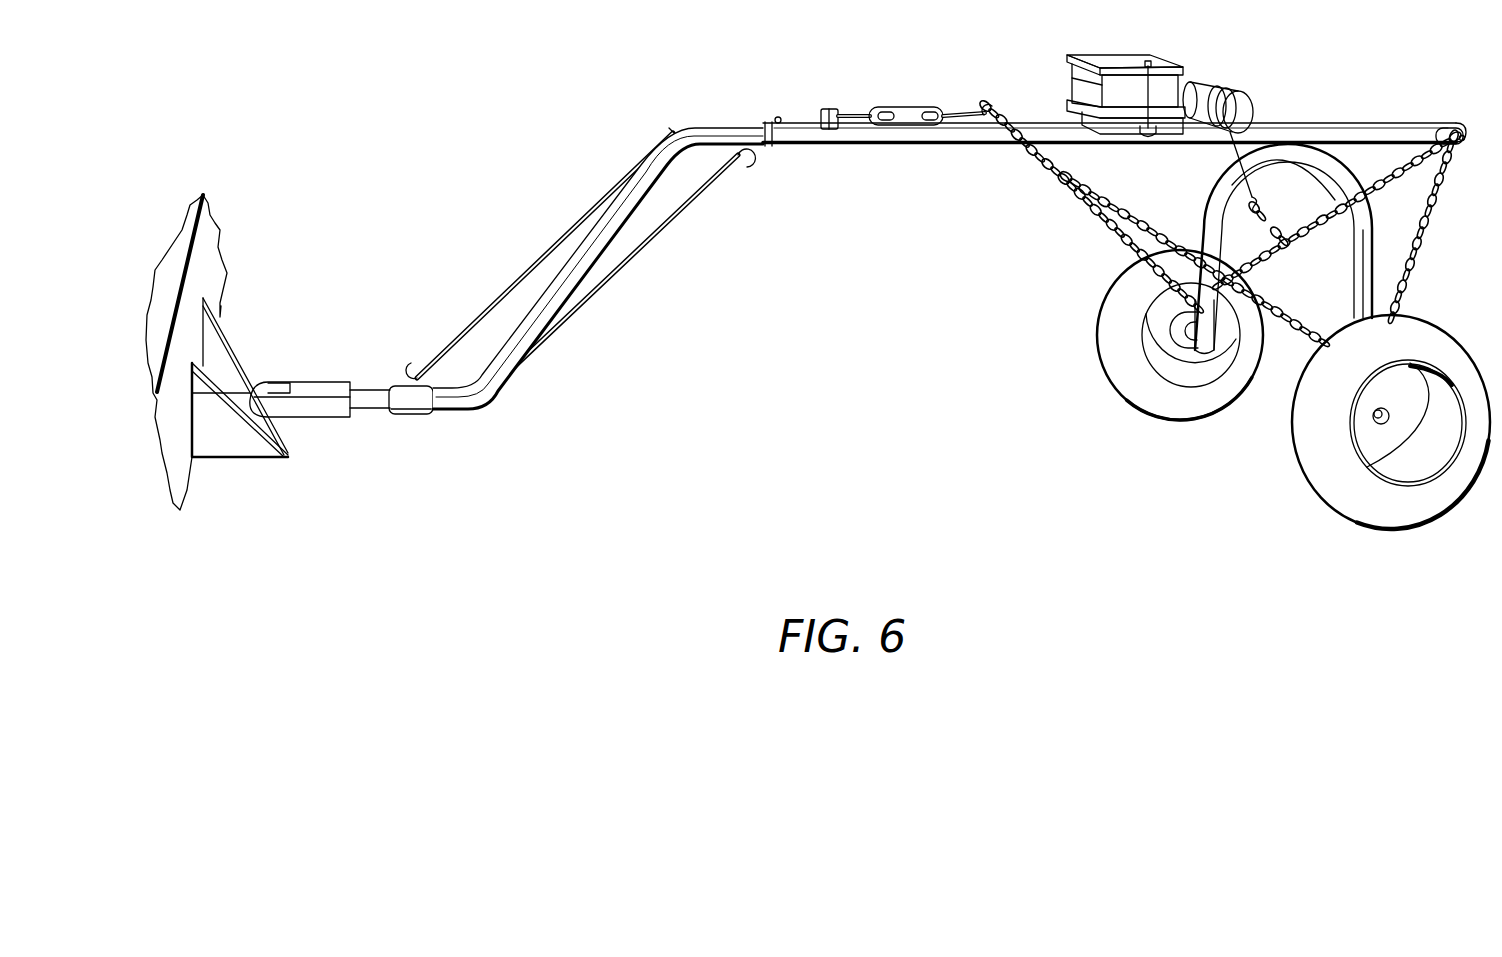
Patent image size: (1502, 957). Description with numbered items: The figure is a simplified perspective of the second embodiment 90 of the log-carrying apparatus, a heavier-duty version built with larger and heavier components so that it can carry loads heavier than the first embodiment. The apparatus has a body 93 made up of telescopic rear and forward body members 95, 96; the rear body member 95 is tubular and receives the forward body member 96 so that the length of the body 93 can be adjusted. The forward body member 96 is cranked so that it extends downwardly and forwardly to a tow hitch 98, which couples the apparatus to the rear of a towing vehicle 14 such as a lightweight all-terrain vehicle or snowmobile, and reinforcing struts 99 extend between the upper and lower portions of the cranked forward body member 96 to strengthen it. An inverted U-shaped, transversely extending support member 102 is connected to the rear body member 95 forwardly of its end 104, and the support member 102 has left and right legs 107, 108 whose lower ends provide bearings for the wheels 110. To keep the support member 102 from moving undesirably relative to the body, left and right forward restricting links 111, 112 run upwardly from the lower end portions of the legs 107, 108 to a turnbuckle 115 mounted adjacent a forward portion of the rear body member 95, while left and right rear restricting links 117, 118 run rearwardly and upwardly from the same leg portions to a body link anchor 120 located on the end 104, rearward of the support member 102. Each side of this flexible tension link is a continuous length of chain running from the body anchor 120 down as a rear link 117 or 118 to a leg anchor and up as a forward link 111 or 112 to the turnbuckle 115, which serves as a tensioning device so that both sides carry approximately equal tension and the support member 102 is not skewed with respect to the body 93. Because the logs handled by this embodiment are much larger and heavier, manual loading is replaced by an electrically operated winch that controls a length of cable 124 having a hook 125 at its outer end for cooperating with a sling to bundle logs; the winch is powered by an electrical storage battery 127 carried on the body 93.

The vehicle 14 is at (200, 255).
The second embodiment of the apparatus 90 is at (676, 62).
The body 93 is at (1291, 102).
The rear body member 95 is at (1403, 130).
The forward body member 96 is at (620, 205).
The tow hitch 98 is at (325, 408).
The reinforcing struts 99 is at (523, 273).
The support member 102 is at (1388, 262).
The end of the rear body member 104 is at (1463, 128).
The left leg 107 is at (1367, 283).
The right leg 108 is at (1220, 208).
The wheels 110 is at (1110, 340).
The left forward restricting link 111 is at (1112, 243).
The right forward restricting link 112 is at (1073, 205).
The turnbuckle 115 is at (900, 103).
The left rear restricting link 117 is at (1417, 248).
The right rear restricting link 118 is at (1393, 187).
The body link anchor 120 is at (1205, 93).
The cable 124 is at (1230, 158).
The hook 125 is at (1322, 170).
The electrical storage battery 127 is at (1130, 57).